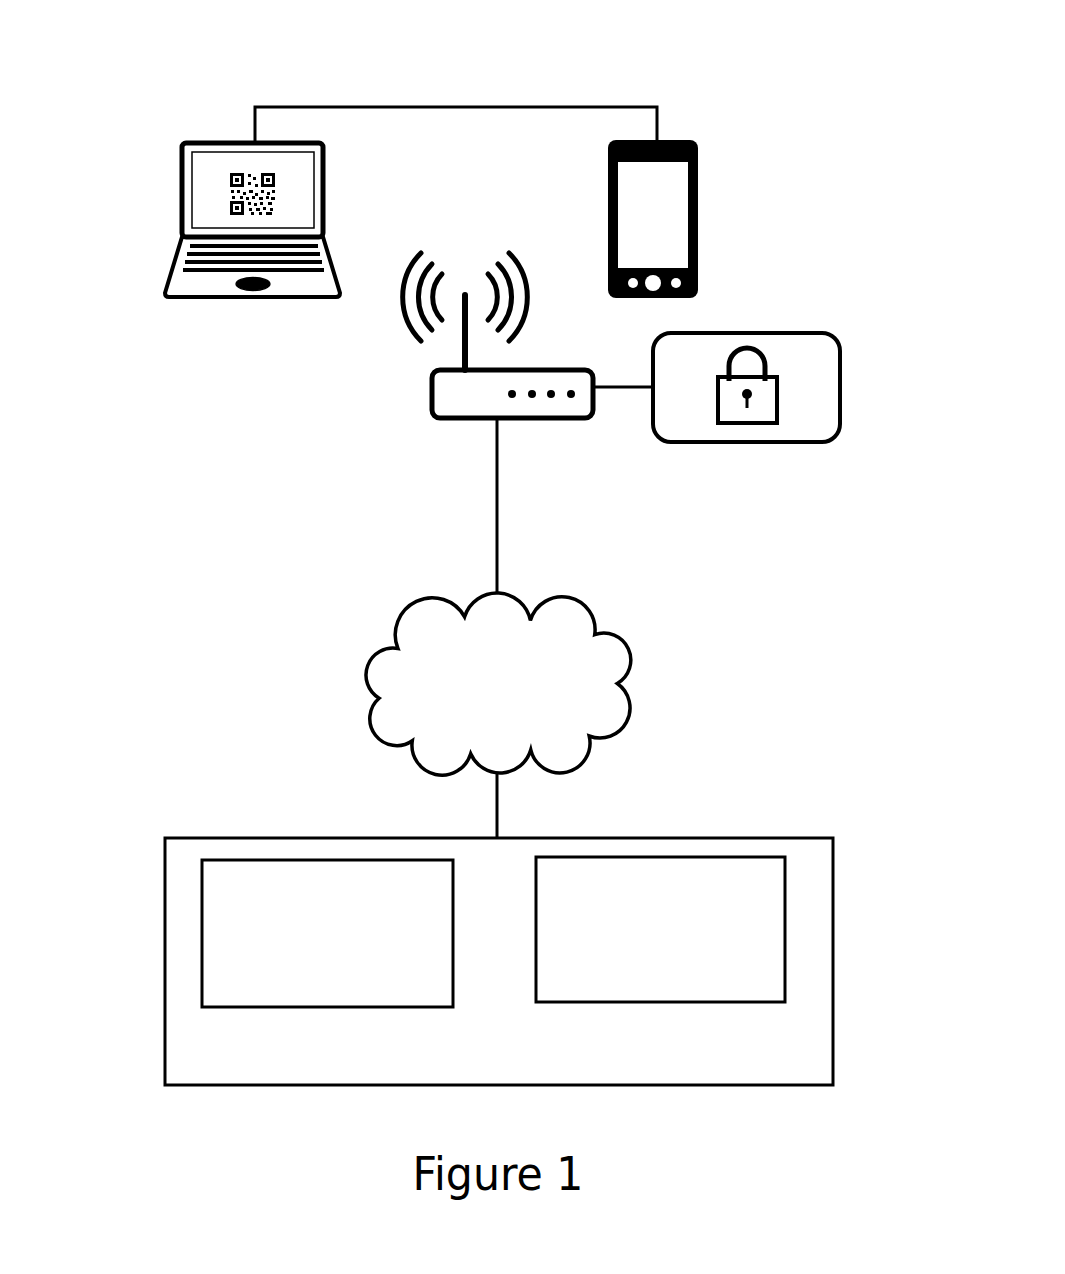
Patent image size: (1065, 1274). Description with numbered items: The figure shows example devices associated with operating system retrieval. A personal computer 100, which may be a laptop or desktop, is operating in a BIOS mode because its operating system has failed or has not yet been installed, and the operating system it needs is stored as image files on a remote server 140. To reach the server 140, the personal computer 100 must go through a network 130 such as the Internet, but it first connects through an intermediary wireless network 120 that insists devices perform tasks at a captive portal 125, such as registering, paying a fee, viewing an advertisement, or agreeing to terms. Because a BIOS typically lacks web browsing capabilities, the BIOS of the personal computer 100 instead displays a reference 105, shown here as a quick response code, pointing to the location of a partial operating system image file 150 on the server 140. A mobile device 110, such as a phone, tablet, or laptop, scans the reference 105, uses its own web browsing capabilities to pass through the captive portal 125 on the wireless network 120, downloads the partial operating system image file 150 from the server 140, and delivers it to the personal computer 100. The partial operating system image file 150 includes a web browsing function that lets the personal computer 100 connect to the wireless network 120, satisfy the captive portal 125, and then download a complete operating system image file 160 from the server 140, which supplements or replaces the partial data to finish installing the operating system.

The personal computer 100 is at (253, 299).
The reference 105 is at (252, 162).
The mobile device 110 is at (698, 218).
The wireless network 120 is at (483, 421).
The captive portal 125 is at (840, 386).
The network 130 is at (459, 720).
The server 140 is at (365, 1077).
The partial operating system image file 150 is at (630, 996).
The complete operating system image file 160 is at (296, 999).